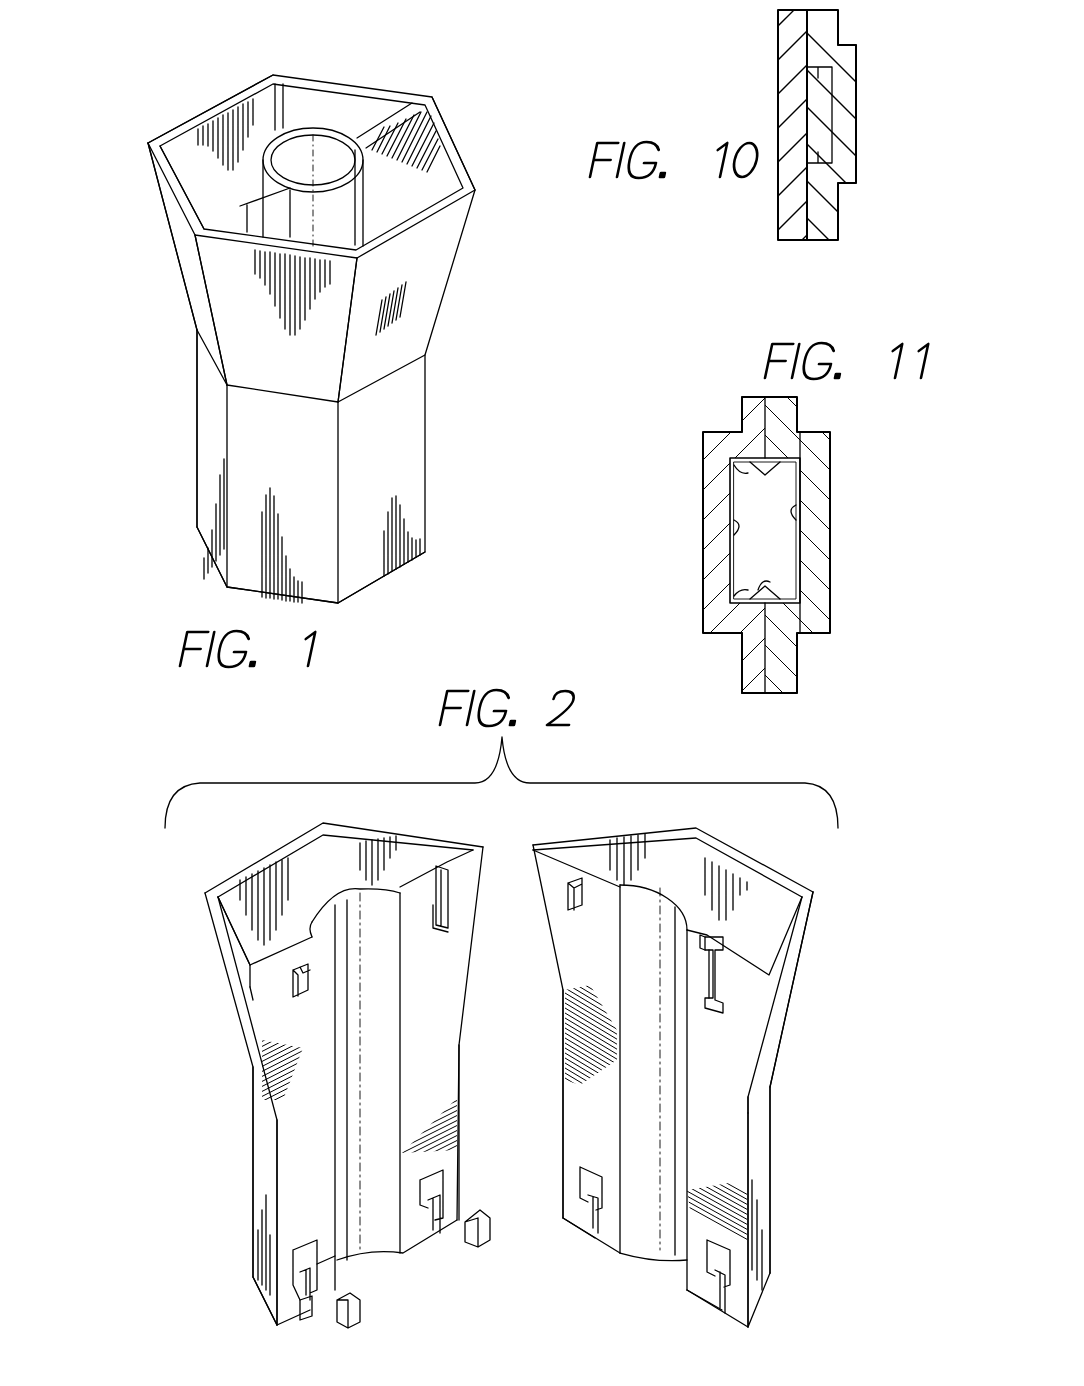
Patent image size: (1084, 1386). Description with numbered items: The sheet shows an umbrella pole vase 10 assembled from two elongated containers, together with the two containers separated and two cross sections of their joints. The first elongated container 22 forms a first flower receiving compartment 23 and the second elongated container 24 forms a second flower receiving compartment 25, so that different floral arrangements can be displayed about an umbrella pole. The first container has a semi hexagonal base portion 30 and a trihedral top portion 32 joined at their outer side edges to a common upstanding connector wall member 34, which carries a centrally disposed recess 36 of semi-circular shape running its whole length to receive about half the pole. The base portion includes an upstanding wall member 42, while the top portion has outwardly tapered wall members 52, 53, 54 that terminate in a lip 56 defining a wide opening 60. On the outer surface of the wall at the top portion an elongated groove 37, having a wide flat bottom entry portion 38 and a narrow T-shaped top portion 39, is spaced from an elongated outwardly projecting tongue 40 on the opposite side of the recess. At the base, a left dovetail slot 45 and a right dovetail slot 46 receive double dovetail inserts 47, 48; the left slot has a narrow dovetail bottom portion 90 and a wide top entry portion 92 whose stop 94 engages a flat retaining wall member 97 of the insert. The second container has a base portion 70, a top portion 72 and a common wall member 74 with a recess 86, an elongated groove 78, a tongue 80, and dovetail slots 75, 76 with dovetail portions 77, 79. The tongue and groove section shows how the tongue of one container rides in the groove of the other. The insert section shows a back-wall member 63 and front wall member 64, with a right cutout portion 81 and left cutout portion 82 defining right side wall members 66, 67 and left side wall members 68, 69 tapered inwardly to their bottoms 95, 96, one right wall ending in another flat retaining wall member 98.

In FIG. 1, the umbrella pole vase 10 is at (197, 520).
In FIG. 1, the first elongated container 22 is at (190, 98).
In FIG. 2, the first elongated container 22 is at (245, 1117).
In FIG. 2, the first flower receiving compartment 23 is at (245, 895).
In FIG. 1, the second elongated container 24 is at (490, 175).
In FIG. 2, the second elongated container 24 is at (790, 1045).
In FIG. 2, the second flower receiving compartment 25 is at (713, 870).
In FIG. 2, the semi hexagonal base portion 30 is at (235, 1228).
In FIG. 2, the trihedral top portion 32 is at (225, 1045).
In FIG. 1, the common upstanding connector wall member 34 is at (195, 215).
In FIG. 10, the common upstanding connector wall member 34 is at (790, 45).
In FIG. 2, the common upstanding connector wall member 34 is at (290, 1120).
In FIG. 2, the centrally disposed recess 36 is at (388, 1270).
In FIG. 2, the elongated groove 37 is at (448, 910).
In FIG. 2, the wide flat bottom entry portion 38 is at (447, 933).
In FIG. 2, the elongated narrow top portion 39 is at (445, 890).
In FIG. 10, the elongated outwardly projecting tongue 40 is at (825, 110).
In FIG. 2, the elongated outwardly projecting tongue 40 is at (327, 1037).
In FIG. 1, the upstanding wall member 42 is at (207, 445).
In FIG. 2, the upstanding wall member 42 is at (260, 1240).
In FIG. 2, the left dovetail slot 45 is at (278, 1325).
In FIG. 2, the right dovetail slot 46 is at (445, 1200).
In FIG. 11, the double dovetail insert 47 is at (760, 545).
In FIG. 2, the double dovetail insert 47 is at (360, 1310).
In FIG. 2, the double dovetail insert 48 is at (490, 1225).
In FIG. 1, the outwardly tapered wall member 52 is at (190, 283).
In FIG. 2, the outwardly tapered wall member 52 is at (262, 975).
In FIG. 1, the outwardly tapered wall member 53 is at (195, 145).
In FIG. 2, the outwardly tapered wall member 53 is at (230, 905).
In FIG. 1, the outwardly tapered wall member 54 is at (312, 97).
In FIG. 2, the outwardly tapered wall member 54 is at (420, 853).
In FIG. 1, the lip 56 is at (245, 95).
In FIG. 2, the lip 56 is at (290, 860).
In FIG. 1, the opening 60 is at (332, 128).
In FIG. 2, the opening 60 is at (345, 865).
In FIG. 11, the back-wall member 63 is at (735, 515).
In FIG. 11, the front wall member 64 is at (825, 510).
In FIG. 11, the right side wall member 66 is at (775, 465).
In FIG. 11, the right side wall member 67 is at (740, 470).
In FIG. 11, the left side wall member 68 is at (775, 595).
In FIG. 11, the left side wall member 69 is at (745, 590).
In FIG. 1, the base portion 70 is at (437, 458).
In FIG. 2, the base portion 70 is at (770, 1170).
In FIG. 1, the top portion 72 is at (465, 285).
In FIG. 2, the top portion 72 is at (795, 945).
In FIG. 1, the common wall member 74 is at (395, 145).
In FIG. 10, the common wall member 74 is at (825, 210).
In FIG. 2, the common wall member 74 is at (745, 1118).
In FIG. 2, the dovetail slot 75 is at (735, 1270).
In FIG. 2, the dovetail slot 76 is at (590, 1185).
In FIG. 2, the dovetail portion 77 is at (712, 1300).
In FIG. 10, the elongated groove 78 is at (853, 80).
In FIG. 2, the elongated groove 78 is at (718, 1000).
In FIG. 2, the dovetail portion 79 is at (585, 1228).
In FIG. 2, the elongated outwardly projecting tongue 80 is at (570, 880).
In FIG. 11, the right cutout portion 81 is at (808, 430).
In FIG. 11, the left cutout portion 82 is at (818, 660).
In FIG. 2, the centrally disposed recess 86 is at (662, 1265).
In FIG. 2, the elongated narrow dovetail bottom portion 90 is at (305, 1320).
In FIG. 2, the elongated wide top entry portion 92 is at (308, 1240).
In FIG. 2, the stop 94 is at (318, 1250).
In FIG. 11, the bottom 95 is at (795, 500).
In FIG. 11, the bottom 96 is at (770, 580).
In FIG. 11, the flat retaining wall member 97 is at (745, 620).
In FIG. 11, the flat retaining wall member 98 is at (745, 460).